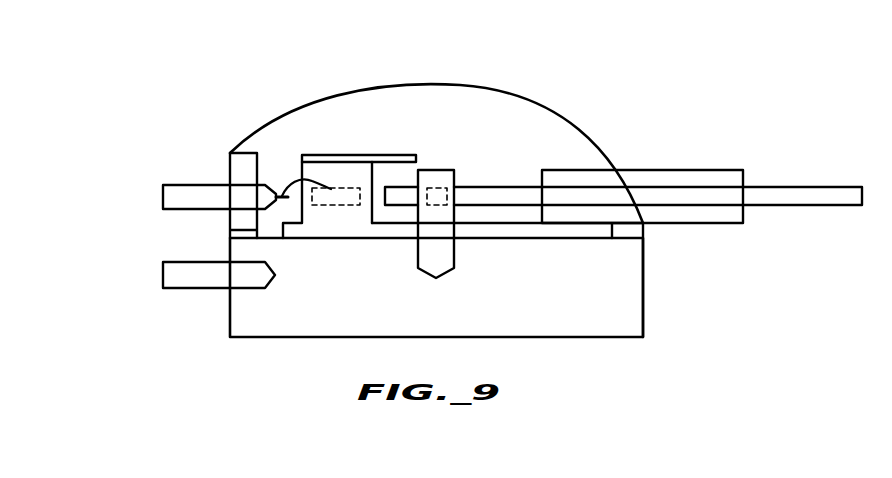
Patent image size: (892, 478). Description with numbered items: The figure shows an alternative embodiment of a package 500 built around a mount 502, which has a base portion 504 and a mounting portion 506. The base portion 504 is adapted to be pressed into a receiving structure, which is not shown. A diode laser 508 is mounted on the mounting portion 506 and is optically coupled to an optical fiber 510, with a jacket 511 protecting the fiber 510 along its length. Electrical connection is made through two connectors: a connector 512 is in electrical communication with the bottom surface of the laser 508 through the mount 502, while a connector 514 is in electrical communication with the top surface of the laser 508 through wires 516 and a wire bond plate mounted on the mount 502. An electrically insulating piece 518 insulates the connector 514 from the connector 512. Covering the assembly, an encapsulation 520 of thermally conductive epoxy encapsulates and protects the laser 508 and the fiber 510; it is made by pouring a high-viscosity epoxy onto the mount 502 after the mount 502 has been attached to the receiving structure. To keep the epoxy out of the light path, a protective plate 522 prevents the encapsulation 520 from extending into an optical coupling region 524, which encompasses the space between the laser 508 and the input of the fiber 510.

The package 500 is at (152, 130).
The mount 502 is at (745, 278).
The base portion 504 is at (643, 325).
The mounting portion 506 is at (418, 170).
The diode laser 508 is at (340, 188).
The optical fiber 510 is at (472, 187).
The jacket 511 is at (633, 170).
The connector 512 is at (220, 289).
The connector 514 is at (160, 190).
The wires 516 is at (287, 180).
The electrically insulating piece 518 is at (230, 234).
The encapsulation 520 is at (550, 106).
The plate 522 is at (304, 155).
The optical coupling region 524 is at (380, 220).